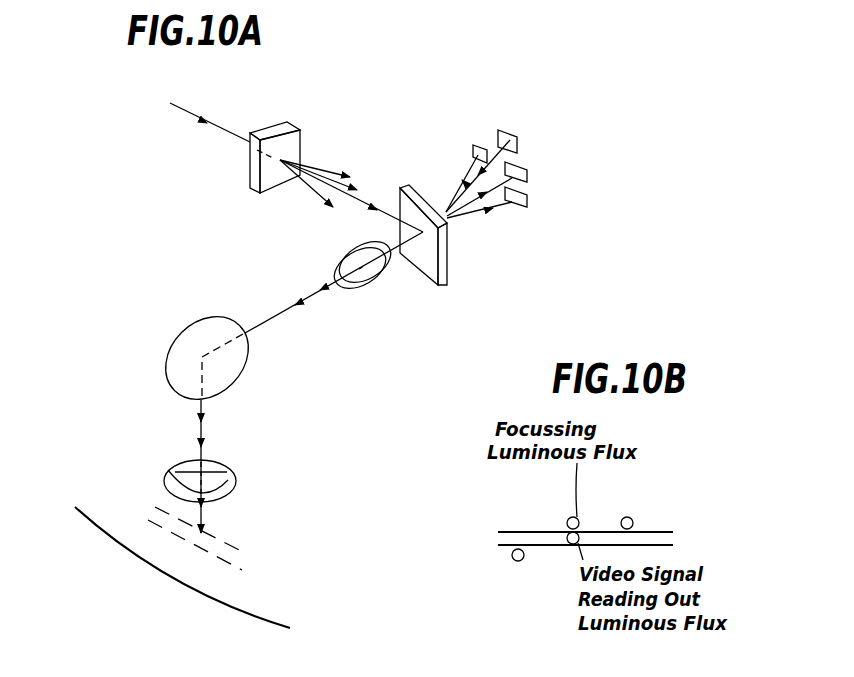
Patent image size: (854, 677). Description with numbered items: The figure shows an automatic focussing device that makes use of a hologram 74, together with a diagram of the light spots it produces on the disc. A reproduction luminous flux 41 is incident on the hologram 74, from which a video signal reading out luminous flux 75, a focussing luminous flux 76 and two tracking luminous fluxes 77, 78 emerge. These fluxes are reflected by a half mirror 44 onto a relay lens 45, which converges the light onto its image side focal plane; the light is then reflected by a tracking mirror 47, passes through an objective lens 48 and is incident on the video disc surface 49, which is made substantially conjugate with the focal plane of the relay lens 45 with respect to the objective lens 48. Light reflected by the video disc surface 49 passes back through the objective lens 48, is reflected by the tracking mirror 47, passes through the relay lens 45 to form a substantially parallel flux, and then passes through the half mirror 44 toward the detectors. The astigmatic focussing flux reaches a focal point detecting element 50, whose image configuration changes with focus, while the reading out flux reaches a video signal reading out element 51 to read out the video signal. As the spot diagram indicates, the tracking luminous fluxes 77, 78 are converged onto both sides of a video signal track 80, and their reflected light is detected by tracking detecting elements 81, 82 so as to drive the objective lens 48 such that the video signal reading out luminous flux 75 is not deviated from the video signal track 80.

In FIG. 10A, the reproduction luminous flux 41 is at (189, 112).
In FIG. 10A, the hologram 74 is at (283, 123).
In FIG. 10A, the focussing luminous flux 76 is at (341, 171).
In FIG. 10B, the focussing luminous flux 76 is at (567, 519).
In FIG. 10A, the tracking luminous flux 77 is at (360, 190).
In FIG. 10B, the tracking luminous flux 77 is at (633, 521).
In FIG. 10A, the tracking luminous flux 78 is at (318, 194).
In FIG. 10B, the tracking luminous flux 78 is at (515, 561).
In FIG. 10A, the video signal reading out luminous flux 75 is at (360, 208).
In FIG. 10B, the video signal reading out luminous flux 75 is at (570, 544).
In FIG. 10A, the half mirror 44 is at (430, 253).
In FIG. 10A, the tracking detecting element 82 is at (477, 145).
In FIG. 10A, the focal point detecting element 50 is at (515, 137).
In FIG. 10A, the video signal reading out element 51 is at (527, 173).
In FIG. 10A, the tracking detecting element 81 is at (525, 206).
In FIG. 10A, the relay lens 45 is at (372, 289).
In FIG. 10A, the tracking mirror 47 is at (236, 369).
In FIG. 10A, the objective lens 48 is at (231, 478).
In FIG. 10A, the video disc surface 49 is at (190, 563).
In FIG. 10B, the video signal track 80 is at (674, 537).